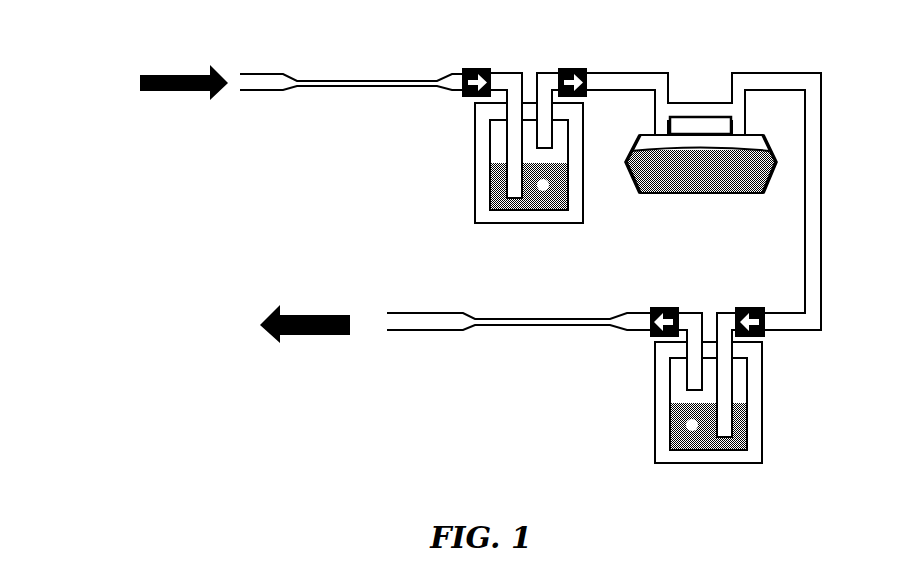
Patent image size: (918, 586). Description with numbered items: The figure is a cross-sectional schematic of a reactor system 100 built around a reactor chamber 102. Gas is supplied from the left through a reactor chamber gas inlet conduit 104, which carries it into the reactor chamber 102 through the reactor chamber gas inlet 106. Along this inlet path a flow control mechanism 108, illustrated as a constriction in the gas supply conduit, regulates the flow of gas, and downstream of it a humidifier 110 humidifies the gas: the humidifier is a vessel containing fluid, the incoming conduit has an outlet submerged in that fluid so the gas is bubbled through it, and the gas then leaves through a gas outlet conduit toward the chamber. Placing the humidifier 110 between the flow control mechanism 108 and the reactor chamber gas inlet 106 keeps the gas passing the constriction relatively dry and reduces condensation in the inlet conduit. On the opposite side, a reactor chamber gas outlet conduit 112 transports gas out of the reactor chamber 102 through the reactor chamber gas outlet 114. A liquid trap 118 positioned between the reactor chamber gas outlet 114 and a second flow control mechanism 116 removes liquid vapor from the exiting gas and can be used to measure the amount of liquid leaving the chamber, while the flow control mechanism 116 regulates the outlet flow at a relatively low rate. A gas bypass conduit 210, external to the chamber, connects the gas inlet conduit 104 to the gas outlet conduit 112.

The reactor system 100 is at (62, 86).
The reactor chamber 102 is at (636, 190).
The reactor chamber gas inlet conduit 104 is at (630, 85).
The reactor chamber gas inlet 106 is at (660, 133).
The flow control mechanism 108 is at (282, 112).
The humidifier 110 is at (590, 230).
The reactor chamber gas outlet conduit 112 is at (780, 85).
The reactor chamber gas outlet 114 is at (740, 133).
The flow control mechanism 116 is at (467, 350).
The liquid trap 118 is at (765, 470).
The gas bypass conduit 210 is at (702, 110).